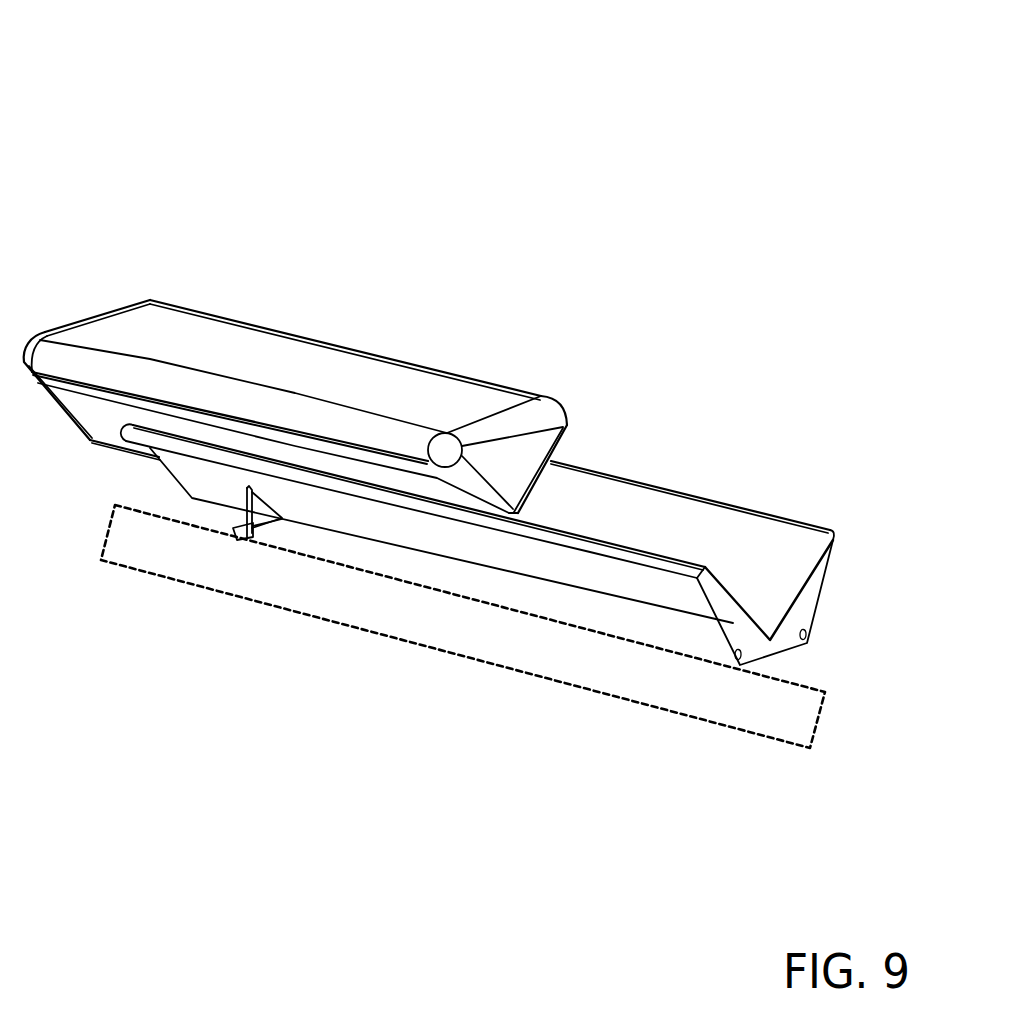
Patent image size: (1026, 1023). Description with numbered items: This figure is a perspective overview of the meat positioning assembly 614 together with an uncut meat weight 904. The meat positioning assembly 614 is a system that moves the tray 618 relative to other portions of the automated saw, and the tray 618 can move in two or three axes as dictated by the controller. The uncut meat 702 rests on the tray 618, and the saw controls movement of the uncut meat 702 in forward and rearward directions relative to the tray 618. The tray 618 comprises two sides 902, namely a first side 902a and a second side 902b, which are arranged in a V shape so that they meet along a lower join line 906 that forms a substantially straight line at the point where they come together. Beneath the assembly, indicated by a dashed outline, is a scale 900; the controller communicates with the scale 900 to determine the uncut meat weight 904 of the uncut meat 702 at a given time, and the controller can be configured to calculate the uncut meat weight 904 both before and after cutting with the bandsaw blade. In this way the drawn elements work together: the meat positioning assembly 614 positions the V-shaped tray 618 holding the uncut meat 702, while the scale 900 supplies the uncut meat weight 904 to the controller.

The meat positioning assembly 614 is at (257, 91).
The uncut meat 702 is at (331, 344).
The uncut meat weight 904 is at (208, 359).
The tray 618 is at (608, 472).
The sides 902 is at (477, 564).
The first side 902a is at (633, 563).
The second side 902b is at (758, 507).
The lower join line 906 is at (767, 623).
The scale 900 is at (463, 626).